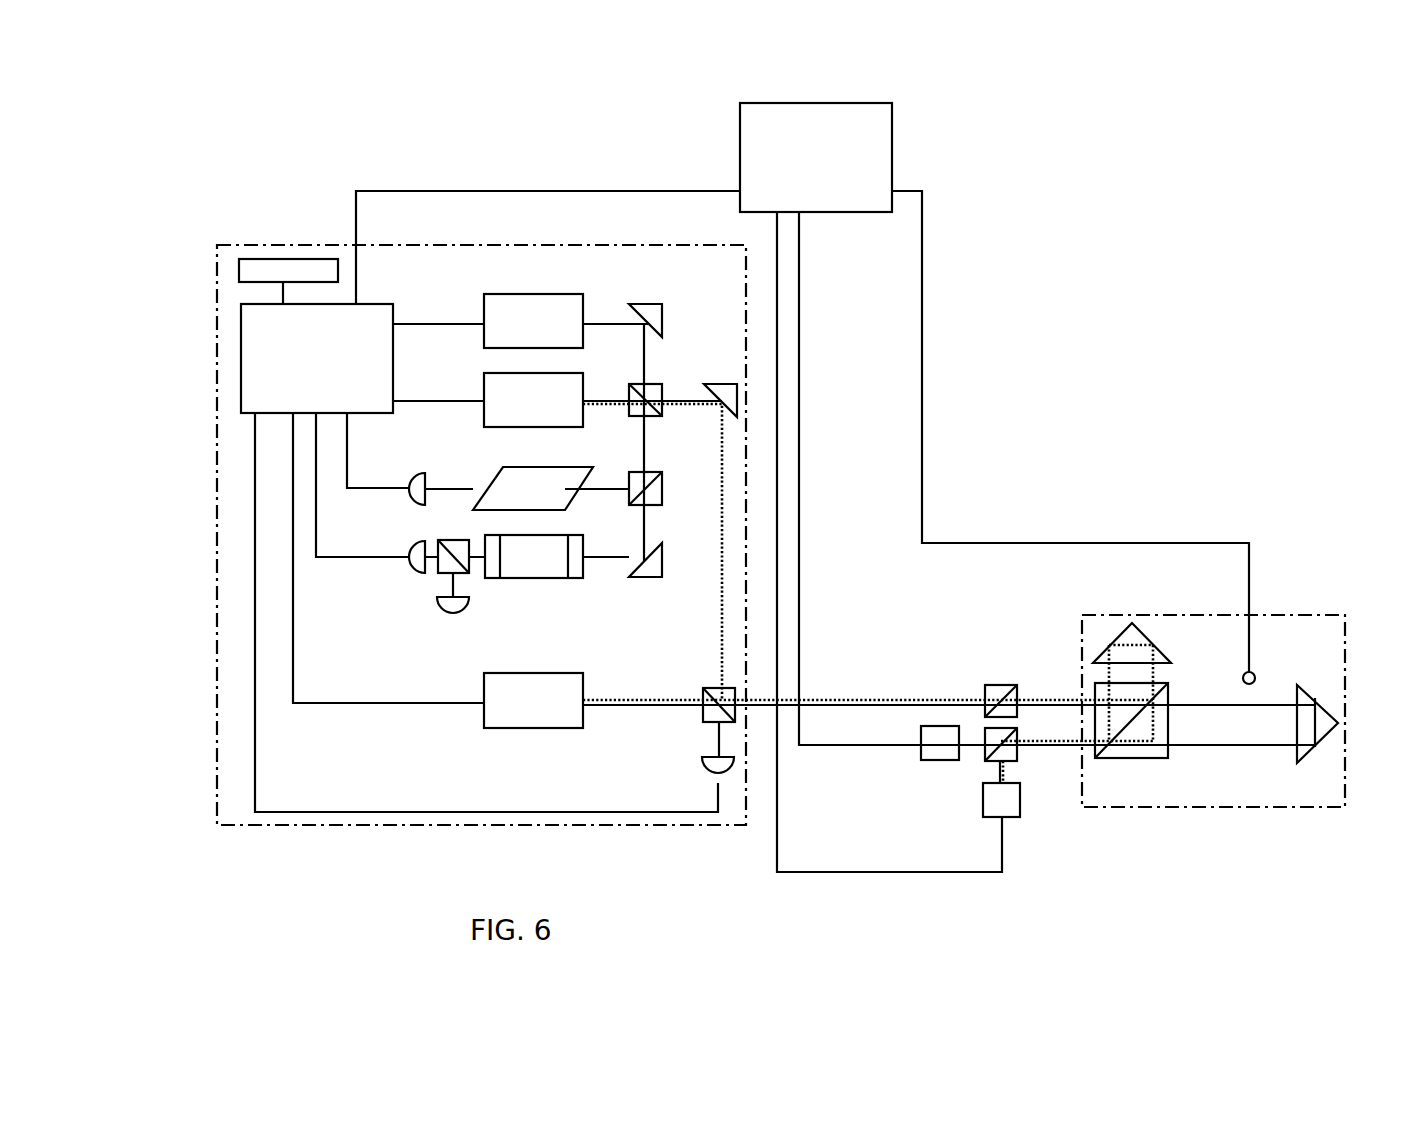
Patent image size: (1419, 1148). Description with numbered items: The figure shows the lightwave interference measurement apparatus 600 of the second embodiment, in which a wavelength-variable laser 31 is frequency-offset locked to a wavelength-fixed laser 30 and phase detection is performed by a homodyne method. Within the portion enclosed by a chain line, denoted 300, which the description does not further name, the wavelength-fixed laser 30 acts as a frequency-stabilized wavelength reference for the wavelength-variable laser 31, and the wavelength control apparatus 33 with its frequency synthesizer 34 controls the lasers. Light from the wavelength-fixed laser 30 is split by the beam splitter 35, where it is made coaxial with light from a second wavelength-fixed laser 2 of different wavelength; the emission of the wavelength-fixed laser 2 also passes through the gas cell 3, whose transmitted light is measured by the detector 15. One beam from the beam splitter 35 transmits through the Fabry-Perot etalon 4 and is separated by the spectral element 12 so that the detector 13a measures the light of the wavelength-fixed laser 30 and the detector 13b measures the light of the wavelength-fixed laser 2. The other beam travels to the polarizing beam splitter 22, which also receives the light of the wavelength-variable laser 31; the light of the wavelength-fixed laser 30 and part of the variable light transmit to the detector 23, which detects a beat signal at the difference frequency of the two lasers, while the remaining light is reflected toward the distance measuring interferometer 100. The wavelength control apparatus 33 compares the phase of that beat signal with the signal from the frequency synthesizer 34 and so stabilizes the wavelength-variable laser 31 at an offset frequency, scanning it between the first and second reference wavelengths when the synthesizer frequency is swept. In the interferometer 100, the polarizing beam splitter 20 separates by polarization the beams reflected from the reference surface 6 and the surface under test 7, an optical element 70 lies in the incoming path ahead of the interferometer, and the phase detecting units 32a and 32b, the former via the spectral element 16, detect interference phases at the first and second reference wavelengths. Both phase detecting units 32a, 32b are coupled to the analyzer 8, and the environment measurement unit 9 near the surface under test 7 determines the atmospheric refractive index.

The lightwave interference measurement apparatus 600 is at (1218, 189).
The analyzer 8 is at (828, 115).
The optical module 300 is at (226, 742).
The frequency synthesizer 34 is at (248, 270).
The wavelength control apparatus 33 is at (238, 402).
The wavelength-fixed laser 2 is at (523, 327).
The wavelength-fixed laser 30 is at (528, 400).
The beam splitter 35 is at (655, 388).
The detector 15 is at (405, 490).
The gas cell 3 is at (530, 486).
The detector 13a is at (405, 560).
The spectral element 12 is at (425, 575).
The detector 13b is at (442, 612).
The Fabry-Perot etalon 4 is at (545, 568).
The wavelength-variable laser 31 is at (531, 716).
The polarizing beam splitter 22 is at (740, 688).
The detector 23 is at (728, 768).
The beam splitter 70 is at (990, 688).
The spectral element 16 is at (1010, 758).
The phase detecting unit 32a is at (935, 748).
The phase detecting unit 32b is at (1012, 805).
The distance measuring interferometer 100 is at (1213, 782).
The polarizing beam splitter 20 is at (1145, 750).
The reference surface 6 is at (1128, 636).
The environment measurement unit 9 is at (1254, 674).
The surface under test 7 is at (1322, 725).